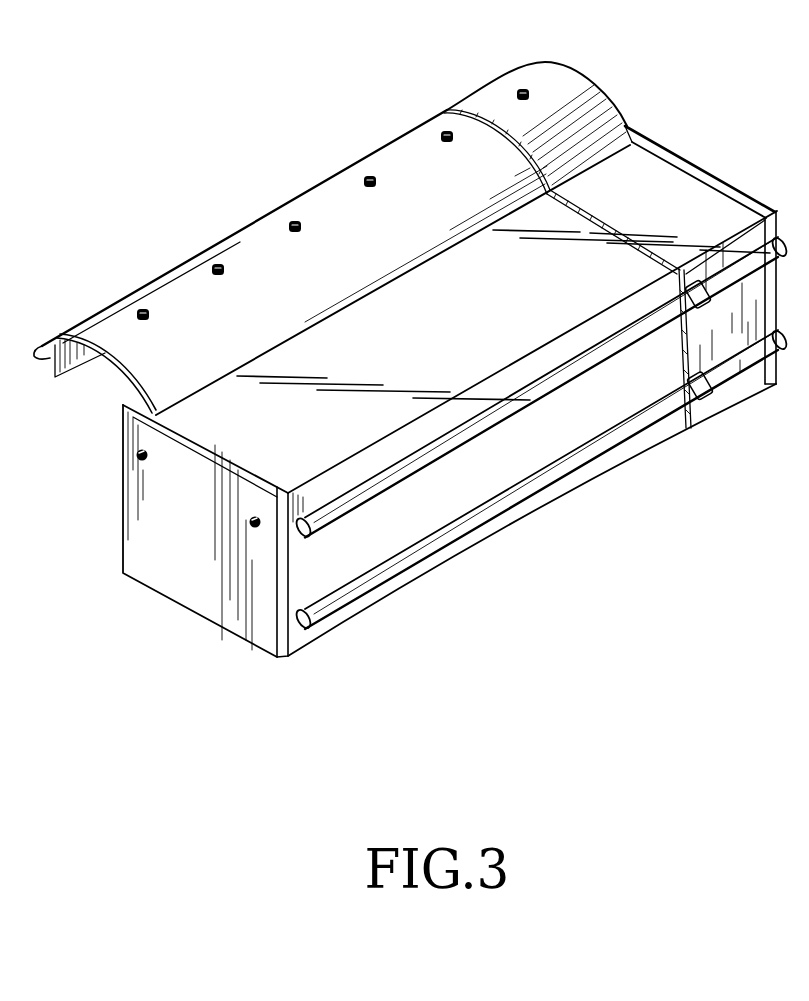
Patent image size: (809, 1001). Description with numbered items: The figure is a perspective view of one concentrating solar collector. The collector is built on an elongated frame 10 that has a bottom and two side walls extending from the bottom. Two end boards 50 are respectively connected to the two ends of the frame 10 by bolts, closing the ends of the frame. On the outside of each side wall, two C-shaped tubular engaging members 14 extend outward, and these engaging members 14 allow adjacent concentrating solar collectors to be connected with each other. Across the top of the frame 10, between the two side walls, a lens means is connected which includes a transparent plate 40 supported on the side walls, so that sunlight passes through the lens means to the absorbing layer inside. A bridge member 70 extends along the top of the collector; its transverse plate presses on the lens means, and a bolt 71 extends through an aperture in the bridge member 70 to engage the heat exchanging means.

The frame 10 is at (387, 600).
The C-shaped tubular engaging member 14 is at (540, 480).
The transparent plate 40 is at (683, 180).
The end board 50 is at (203, 610).
The bridge member 70 is at (397, 155).
The bolt 71 is at (447, 130).